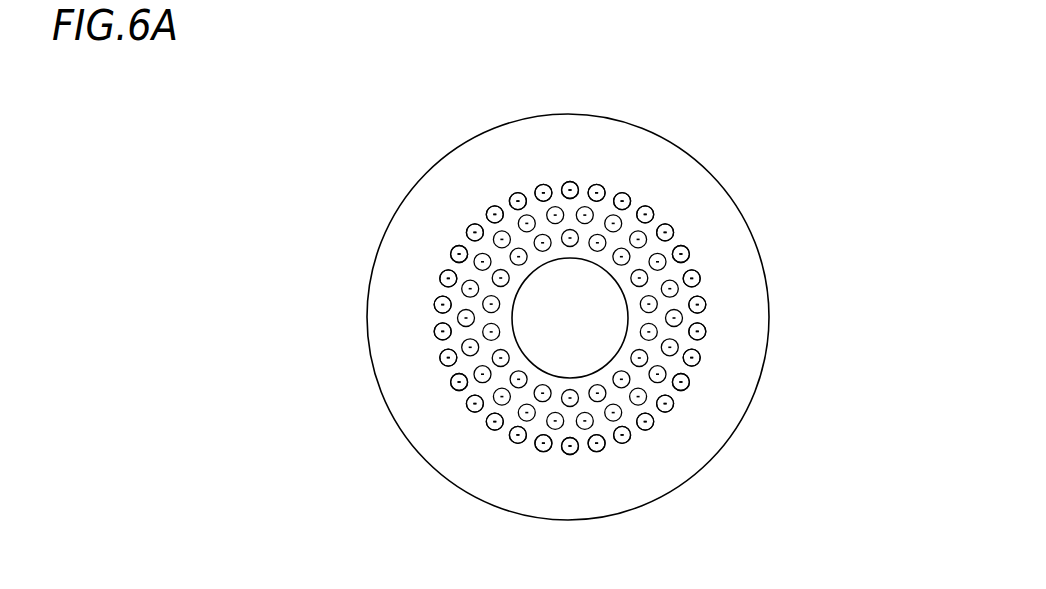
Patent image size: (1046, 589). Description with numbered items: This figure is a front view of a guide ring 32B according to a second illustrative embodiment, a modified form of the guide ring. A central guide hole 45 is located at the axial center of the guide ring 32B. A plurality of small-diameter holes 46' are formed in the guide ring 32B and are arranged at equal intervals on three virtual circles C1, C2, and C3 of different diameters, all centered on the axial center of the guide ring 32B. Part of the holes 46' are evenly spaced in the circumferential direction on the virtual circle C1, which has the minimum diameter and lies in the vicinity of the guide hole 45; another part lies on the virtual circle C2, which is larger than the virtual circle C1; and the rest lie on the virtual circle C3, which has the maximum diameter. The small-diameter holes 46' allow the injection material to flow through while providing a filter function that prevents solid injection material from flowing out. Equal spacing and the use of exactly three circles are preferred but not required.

The guide ring 32B is at (371, 272).
The guide hole 45 is at (629, 301).
The small-diameter holes 46' is at (565, 327).
The virtual circle C1 is at (700, 305).
The virtual circle C2 is at (477, 266).
The virtual circle C3 is at (538, 187).